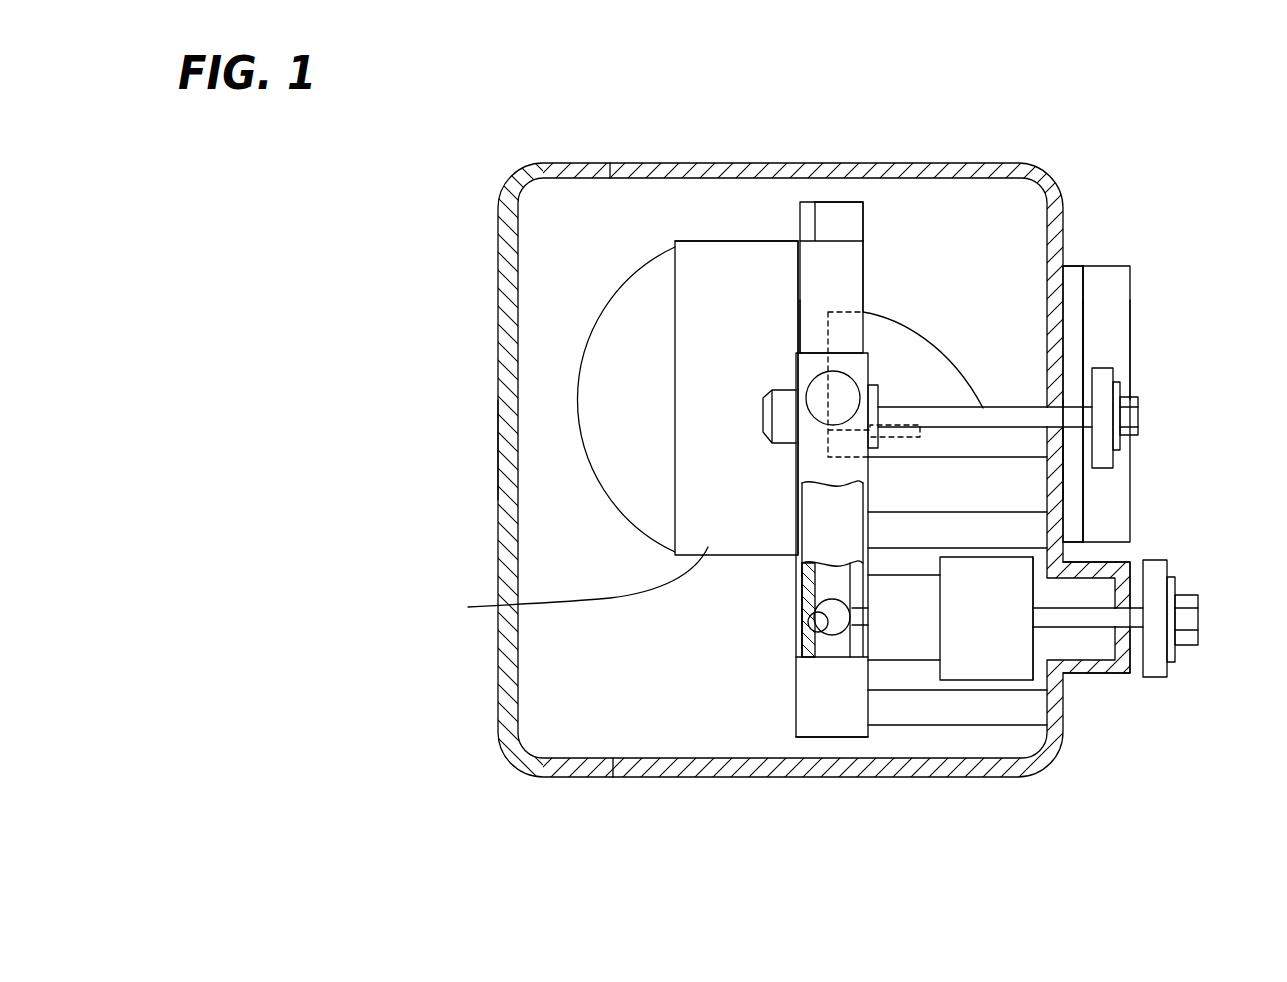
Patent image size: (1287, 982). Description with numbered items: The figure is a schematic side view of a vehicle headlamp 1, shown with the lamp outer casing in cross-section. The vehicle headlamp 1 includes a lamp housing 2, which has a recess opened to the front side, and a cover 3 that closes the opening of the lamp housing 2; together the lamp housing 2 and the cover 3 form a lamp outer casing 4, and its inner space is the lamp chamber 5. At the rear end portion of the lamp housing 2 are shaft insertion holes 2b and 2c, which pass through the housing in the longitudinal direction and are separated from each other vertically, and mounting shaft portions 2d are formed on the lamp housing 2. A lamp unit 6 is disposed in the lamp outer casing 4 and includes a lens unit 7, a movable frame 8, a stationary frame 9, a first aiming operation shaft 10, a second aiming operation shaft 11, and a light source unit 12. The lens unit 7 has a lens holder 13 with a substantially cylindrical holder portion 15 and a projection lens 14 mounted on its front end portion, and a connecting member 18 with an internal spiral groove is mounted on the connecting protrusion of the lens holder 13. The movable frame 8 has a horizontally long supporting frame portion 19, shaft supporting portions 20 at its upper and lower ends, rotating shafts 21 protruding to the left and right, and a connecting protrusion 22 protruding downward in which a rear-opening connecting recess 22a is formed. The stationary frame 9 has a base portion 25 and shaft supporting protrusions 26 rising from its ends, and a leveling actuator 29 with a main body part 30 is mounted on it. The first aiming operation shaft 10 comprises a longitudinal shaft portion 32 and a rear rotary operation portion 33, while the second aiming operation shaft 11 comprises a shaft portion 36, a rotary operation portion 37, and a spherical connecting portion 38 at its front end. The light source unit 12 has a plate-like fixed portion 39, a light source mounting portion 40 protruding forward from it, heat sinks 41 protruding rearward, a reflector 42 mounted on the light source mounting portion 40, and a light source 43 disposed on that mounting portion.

The vehicle headlamp 1 is at (448, 197).
The lamp housing 2 is at (653, 162).
The shaft insertion hole 2b is at (1108, 420).
The shaft insertion hole 2c is at (1137, 615).
The mounting shaft portion 2d is at (1005, 513).
The cover 3 is at (571, 162).
The lamp outer casing 4 is at (578, 116).
The lamp chamber 5 is at (552, 265).
The lamp unit 6 is at (765, 253).
The lens unit 7 is at (735, 253).
The movable frame 8 is at (807, 218).
The stationary frame 9 is at (837, 728).
The first aiming operation shaft 10 is at (1108, 460).
The second aiming operation shaft 11 is at (1165, 567).
The light source unit 12 is at (1012, 452).
The lens holder 13 is at (697, 253).
The projection lens 14 is at (592, 400).
The holder portion 15 is at (570, 585).
The connecting member 18 is at (777, 423).
The supporting frame portion 19 is at (863, 265).
The shaft supporting portion 20 is at (850, 218).
The rotating shaft 21 is at (845, 390).
The connecting protrusion 22 is at (797, 660).
The connecting recess 22a is at (832, 628).
The base portion 25 is at (858, 730).
The shaft supporting protrusion 26 is at (812, 358).
The leveling actuator 29 is at (990, 670).
The main body part 30 is at (1013, 670).
The shaft portion 32 is at (1072, 272).
The rotary operation portion 33 is at (1125, 413).
The shaft portion 36 is at (1078, 620).
The rotary operation portion 37 is at (1155, 590).
The spherical connecting portion 38 is at (802, 607).
The fixed portion 39 is at (1000, 410).
The light source mounting portion 40 is at (1033, 455).
The heat sink 41 is at (1113, 284).
The reflector 42 is at (915, 348).
The light source 43 is at (882, 425).